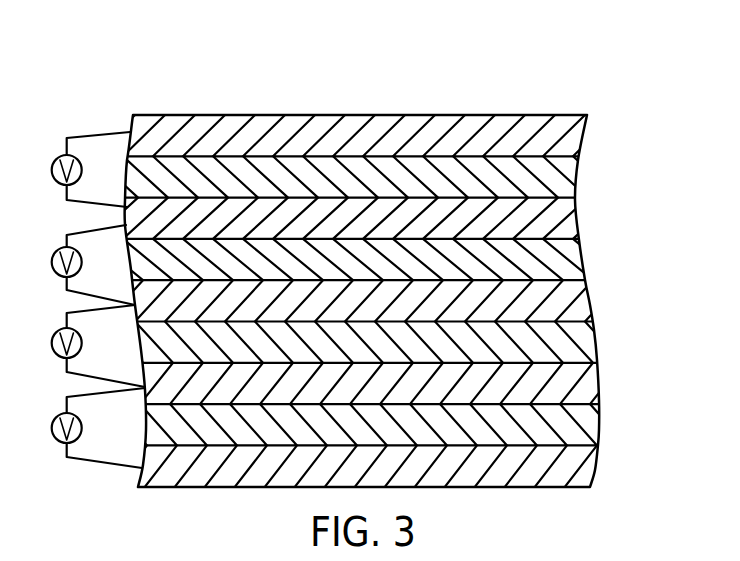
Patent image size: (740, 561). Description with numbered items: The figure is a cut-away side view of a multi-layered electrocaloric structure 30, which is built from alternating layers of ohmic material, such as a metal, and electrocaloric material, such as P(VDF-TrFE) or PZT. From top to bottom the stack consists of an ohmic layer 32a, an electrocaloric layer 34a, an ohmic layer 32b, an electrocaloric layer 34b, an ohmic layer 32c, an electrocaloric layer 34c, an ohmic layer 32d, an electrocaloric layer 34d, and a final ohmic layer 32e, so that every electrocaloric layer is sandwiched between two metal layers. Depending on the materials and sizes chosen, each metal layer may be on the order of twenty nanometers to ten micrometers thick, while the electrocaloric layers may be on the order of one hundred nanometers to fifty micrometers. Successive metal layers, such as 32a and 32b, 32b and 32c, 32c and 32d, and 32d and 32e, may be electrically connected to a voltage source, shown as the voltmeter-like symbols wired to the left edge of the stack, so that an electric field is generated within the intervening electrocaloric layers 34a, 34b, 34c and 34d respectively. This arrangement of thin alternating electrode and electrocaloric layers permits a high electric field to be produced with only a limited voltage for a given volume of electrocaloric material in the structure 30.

The multi-layered electrocaloric structure 30 is at (78, 72).
The ohmic material layer 32a is at (568, 140).
The electrocaloric material layer 34a is at (568, 180).
The ohmic material layer 32b is at (570, 218).
The electrocaloric material layer 34b is at (573, 263).
The ohmic material layer 32c is at (578, 303).
The electrocaloric material layer 34c is at (583, 343).
The ohmic material layer 32d is at (590, 385).
The electrocaloric material layer 34d is at (590, 428).
The ohmic material layer 32e is at (585, 472).